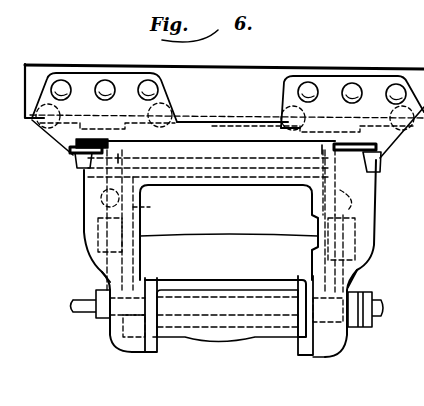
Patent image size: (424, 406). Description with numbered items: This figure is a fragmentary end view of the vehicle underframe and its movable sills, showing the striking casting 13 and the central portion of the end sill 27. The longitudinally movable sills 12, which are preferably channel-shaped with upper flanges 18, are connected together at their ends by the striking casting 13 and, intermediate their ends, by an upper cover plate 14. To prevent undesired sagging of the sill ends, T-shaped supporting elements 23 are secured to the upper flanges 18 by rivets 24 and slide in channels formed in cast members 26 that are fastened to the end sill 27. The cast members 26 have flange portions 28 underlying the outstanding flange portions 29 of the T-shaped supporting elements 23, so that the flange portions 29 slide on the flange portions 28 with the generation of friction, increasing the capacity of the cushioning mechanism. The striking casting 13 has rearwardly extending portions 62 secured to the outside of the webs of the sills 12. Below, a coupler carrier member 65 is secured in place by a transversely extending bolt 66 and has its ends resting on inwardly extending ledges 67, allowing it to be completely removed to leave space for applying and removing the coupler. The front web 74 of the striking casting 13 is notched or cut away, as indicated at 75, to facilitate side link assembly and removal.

The sills 12 is at (128, 243).
The striking casting 13 is at (218, 190).
The upper cover plate 14 is at (171, 167).
The upper flanges 18 is at (384, 172).
The T-shaped supporting elements 23 is at (74, 155).
The rivets 24 is at (96, 192).
The cast members 26 is at (42, 132).
The end sill 27 is at (233, 72).
The flange portions 28 is at (92, 168).
The outstanding flange portions 29 is at (376, 176).
The rearwardly extending portions 62 is at (92, 267).
The coupler carrier member 65 is at (278, 328).
The bolt 66 is at (242, 314).
The ledges 67 is at (150, 352).
The front web 74 is at (87, 235).
The notch 75 is at (320, 237).